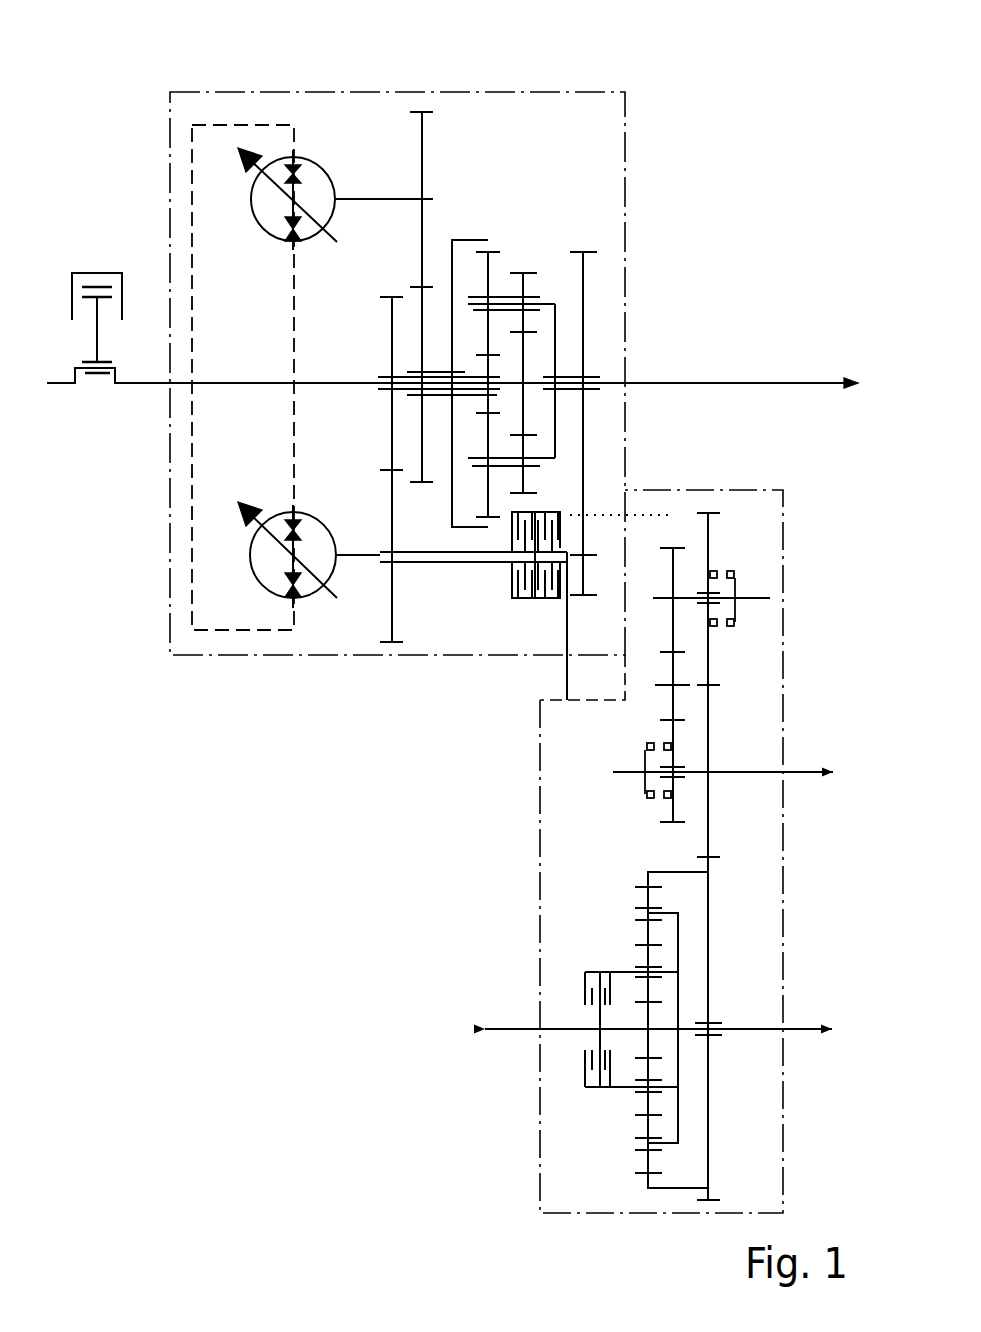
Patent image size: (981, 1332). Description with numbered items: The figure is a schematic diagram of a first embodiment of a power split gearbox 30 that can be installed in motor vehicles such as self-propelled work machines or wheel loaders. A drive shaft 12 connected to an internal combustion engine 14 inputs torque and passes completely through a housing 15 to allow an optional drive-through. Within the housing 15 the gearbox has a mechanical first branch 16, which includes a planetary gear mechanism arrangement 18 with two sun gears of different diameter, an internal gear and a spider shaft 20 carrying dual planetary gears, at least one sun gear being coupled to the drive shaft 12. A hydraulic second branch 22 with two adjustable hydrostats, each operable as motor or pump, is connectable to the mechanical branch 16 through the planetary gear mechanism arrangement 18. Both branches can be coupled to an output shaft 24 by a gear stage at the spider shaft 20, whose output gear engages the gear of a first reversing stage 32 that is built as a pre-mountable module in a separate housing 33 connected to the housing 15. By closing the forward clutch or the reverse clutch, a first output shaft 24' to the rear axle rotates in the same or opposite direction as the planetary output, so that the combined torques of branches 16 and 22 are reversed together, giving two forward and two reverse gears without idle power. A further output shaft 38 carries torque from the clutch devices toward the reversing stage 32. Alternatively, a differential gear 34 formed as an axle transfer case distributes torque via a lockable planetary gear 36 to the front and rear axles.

The drive shaft 12 is at (248, 383).
The internal combustion engine 14 is at (97, 212).
The housing 15 is at (625, 107).
The mechanical first branch 16 is at (482, 107).
The planetary gear mechanism arrangement 18 is at (522, 165).
The spider shaft 20 is at (556, 308).
The hydraulic second branch 22 is at (250, 103).
The output shaft 24 is at (657, 995).
The first output shaft 24' is at (742, 733).
The power split gearbox 30 is at (752, 92).
The first reversing stage 32 is at (739, 468).
The separate housing 33 is at (785, 508).
The differential gear 34 is at (572, 915).
The lockable planetary gear 36 is at (595, 1158).
The output shaft 38 is at (592, 637).